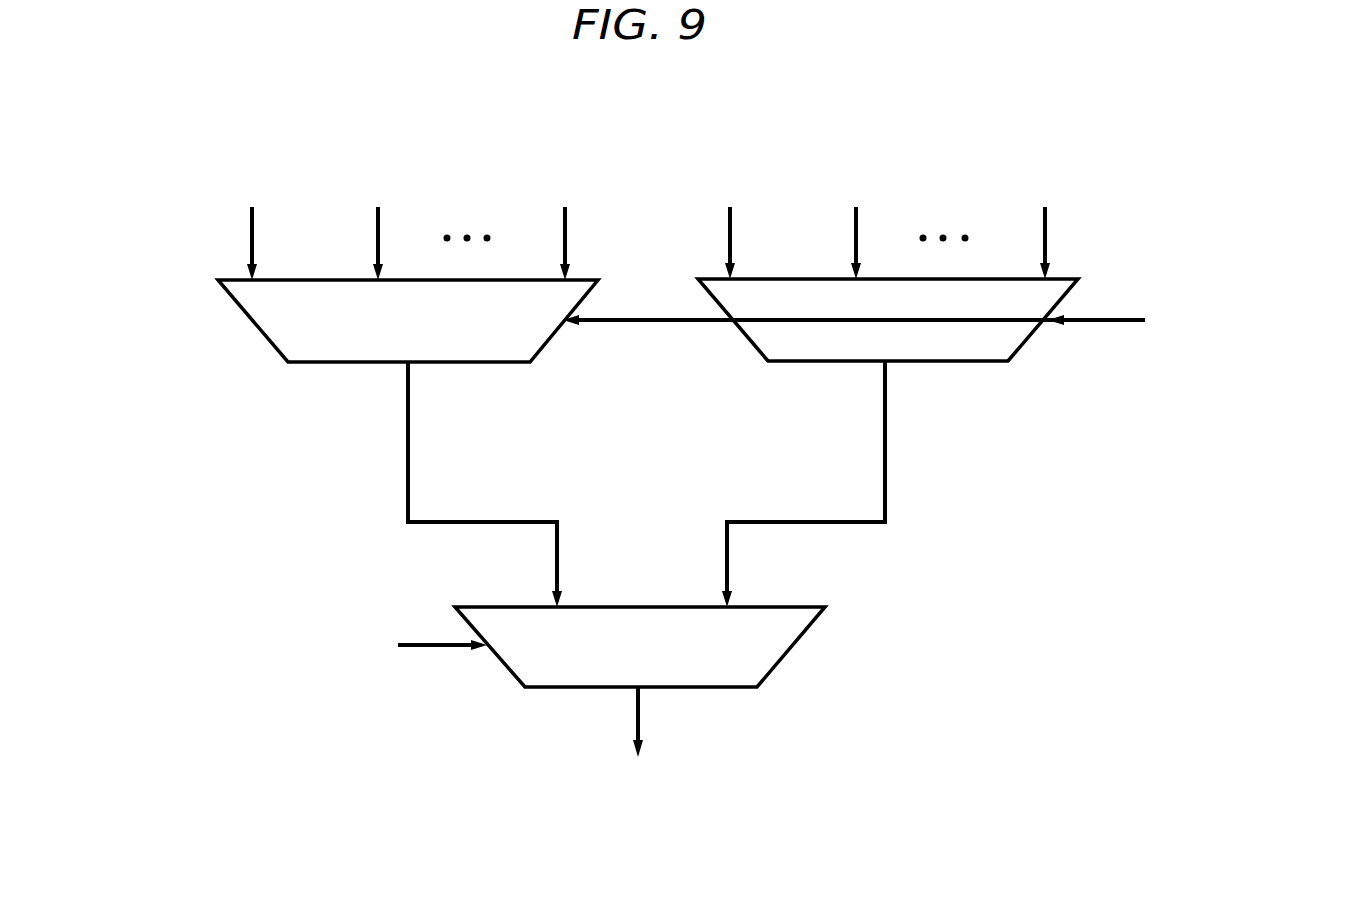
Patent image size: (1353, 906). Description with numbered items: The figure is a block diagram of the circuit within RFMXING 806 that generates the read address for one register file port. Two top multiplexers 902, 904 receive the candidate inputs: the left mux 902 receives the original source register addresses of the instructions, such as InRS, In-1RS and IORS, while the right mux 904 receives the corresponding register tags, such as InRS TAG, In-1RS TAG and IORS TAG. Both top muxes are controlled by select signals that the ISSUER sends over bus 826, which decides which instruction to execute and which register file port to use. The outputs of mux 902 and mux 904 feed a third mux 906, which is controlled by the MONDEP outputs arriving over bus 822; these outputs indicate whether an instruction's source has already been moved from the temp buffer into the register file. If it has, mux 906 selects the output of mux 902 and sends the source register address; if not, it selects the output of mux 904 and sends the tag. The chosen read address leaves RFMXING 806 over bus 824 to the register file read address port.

The RFMXING 806 is at (120, 162).
The top multiplexer 902 is at (250, 322).
The top multiplexer 904 is at (740, 330).
The third mux 906 is at (800, 635).
The bus 822 is at (430, 645).
The bus 824 is at (641, 712).
The bus 826 is at (1080, 322).